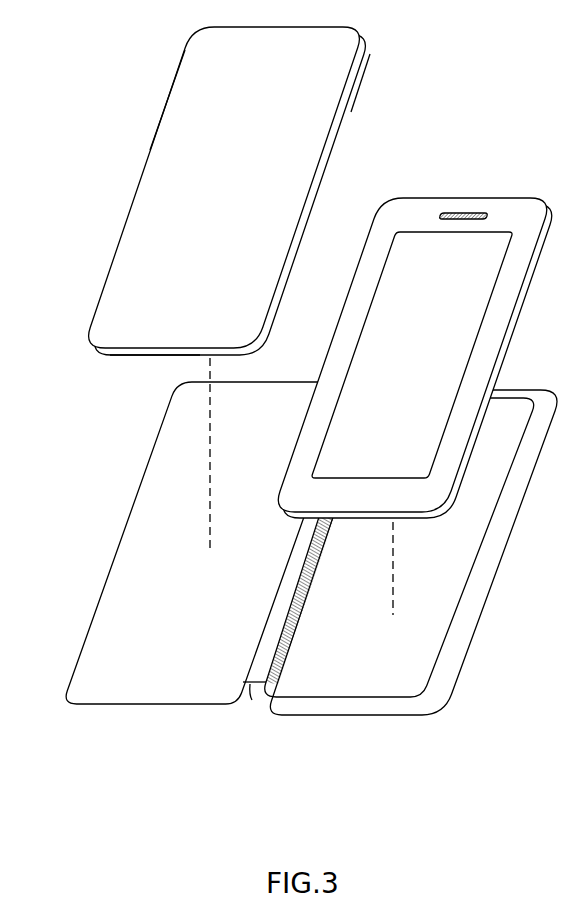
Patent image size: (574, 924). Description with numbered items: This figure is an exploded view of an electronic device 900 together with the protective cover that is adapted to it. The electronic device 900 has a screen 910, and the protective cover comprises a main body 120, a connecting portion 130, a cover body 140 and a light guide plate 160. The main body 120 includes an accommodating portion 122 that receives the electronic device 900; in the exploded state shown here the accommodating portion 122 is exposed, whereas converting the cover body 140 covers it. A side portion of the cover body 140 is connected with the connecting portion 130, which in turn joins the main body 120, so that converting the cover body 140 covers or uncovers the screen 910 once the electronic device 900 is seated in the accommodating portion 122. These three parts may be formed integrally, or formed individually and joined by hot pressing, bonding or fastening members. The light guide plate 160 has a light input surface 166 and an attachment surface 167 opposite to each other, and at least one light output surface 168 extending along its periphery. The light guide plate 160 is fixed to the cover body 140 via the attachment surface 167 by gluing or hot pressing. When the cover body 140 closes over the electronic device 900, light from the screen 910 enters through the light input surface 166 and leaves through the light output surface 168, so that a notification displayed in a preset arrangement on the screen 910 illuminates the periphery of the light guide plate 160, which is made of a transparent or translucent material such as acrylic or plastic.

The main body 120 is at (395, 714).
The accommodating portion 122 is at (368, 673).
The connecting portion 130 is at (260, 684).
The cover body 140 is at (140, 580).
The light guide plate 160 is at (128, 216).
The light input surface 166 is at (162, 112).
The attachment surface 167 is at (128, 364).
The light output surface 168 is at (360, 84).
The electronic device 900 is at (522, 200).
The screen 910 is at (407, 257).